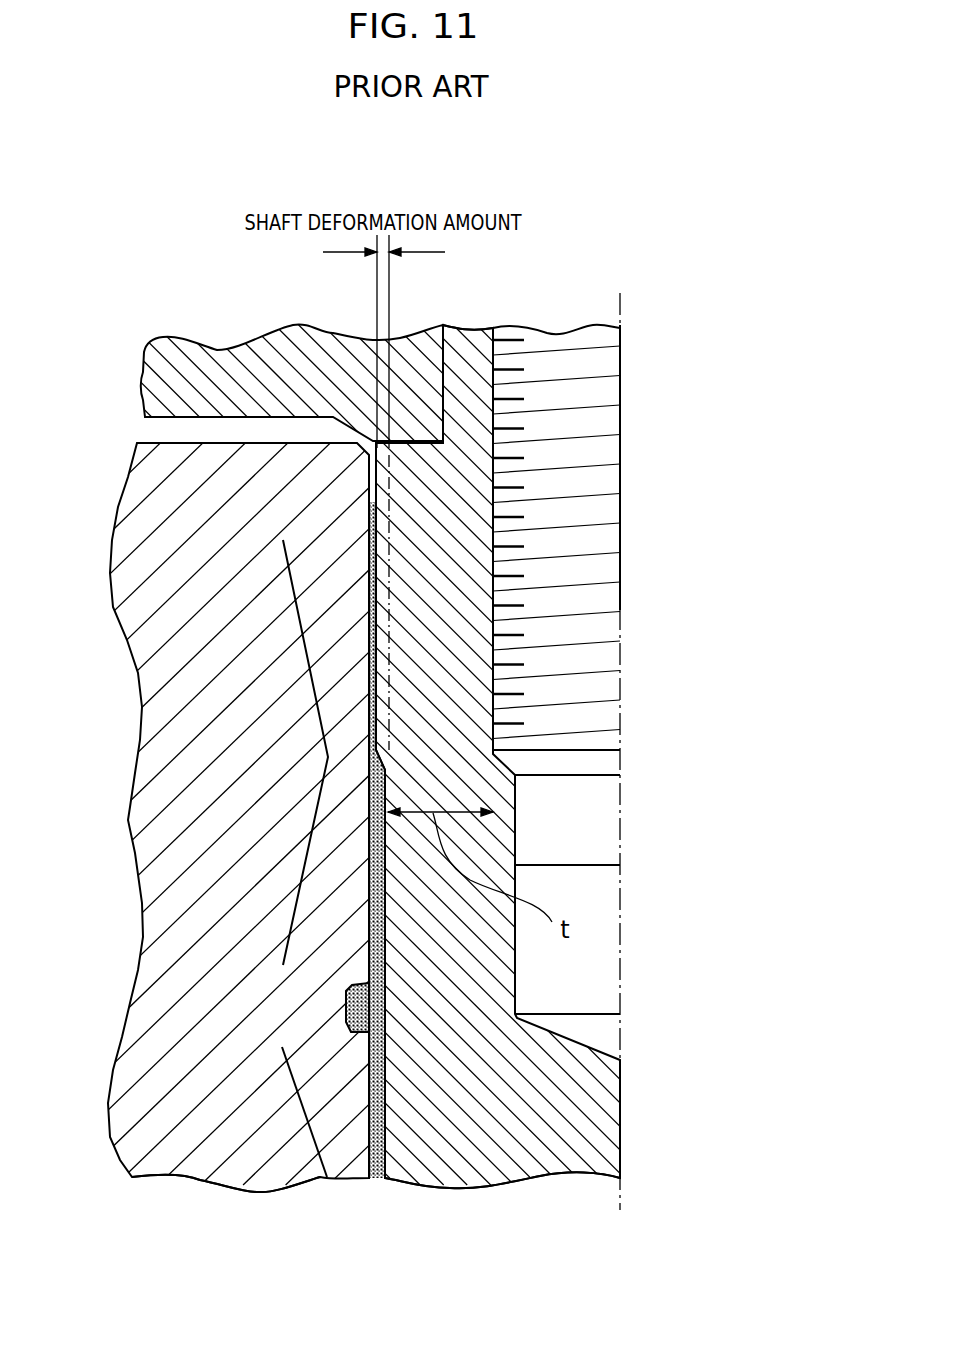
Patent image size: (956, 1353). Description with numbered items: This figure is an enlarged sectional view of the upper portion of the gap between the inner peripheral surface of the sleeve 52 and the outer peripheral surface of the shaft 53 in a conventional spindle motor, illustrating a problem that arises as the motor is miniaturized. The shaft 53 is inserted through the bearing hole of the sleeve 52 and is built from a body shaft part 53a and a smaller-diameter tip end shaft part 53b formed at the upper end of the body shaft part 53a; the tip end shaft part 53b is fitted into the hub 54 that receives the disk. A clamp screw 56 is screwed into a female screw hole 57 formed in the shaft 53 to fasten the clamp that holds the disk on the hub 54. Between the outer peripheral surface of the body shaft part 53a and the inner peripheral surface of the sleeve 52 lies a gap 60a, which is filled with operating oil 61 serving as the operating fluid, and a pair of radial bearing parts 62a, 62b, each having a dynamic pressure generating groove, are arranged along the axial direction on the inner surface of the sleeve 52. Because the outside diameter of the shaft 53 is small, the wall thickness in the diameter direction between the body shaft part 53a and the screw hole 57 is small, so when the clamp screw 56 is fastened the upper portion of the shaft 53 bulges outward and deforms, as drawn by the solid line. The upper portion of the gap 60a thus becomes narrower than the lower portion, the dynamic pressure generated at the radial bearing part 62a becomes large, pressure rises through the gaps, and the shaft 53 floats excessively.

The sleeve 52 is at (190, 770).
The shaft 53 is at (553, 1125).
The body shaft part 53a is at (453, 1143).
The tip end shaft part 53b is at (465, 343).
The hub 54 is at (212, 372).
The clamp screw 56 is at (610, 363).
The screw hole 57 is at (582, 827).
The gap 60a is at (367, 1120).
The operating oil 61 is at (260, 1167).
The radial bearing part 62a is at (283, 600).
The radial bearing part 62b is at (367, 1067).